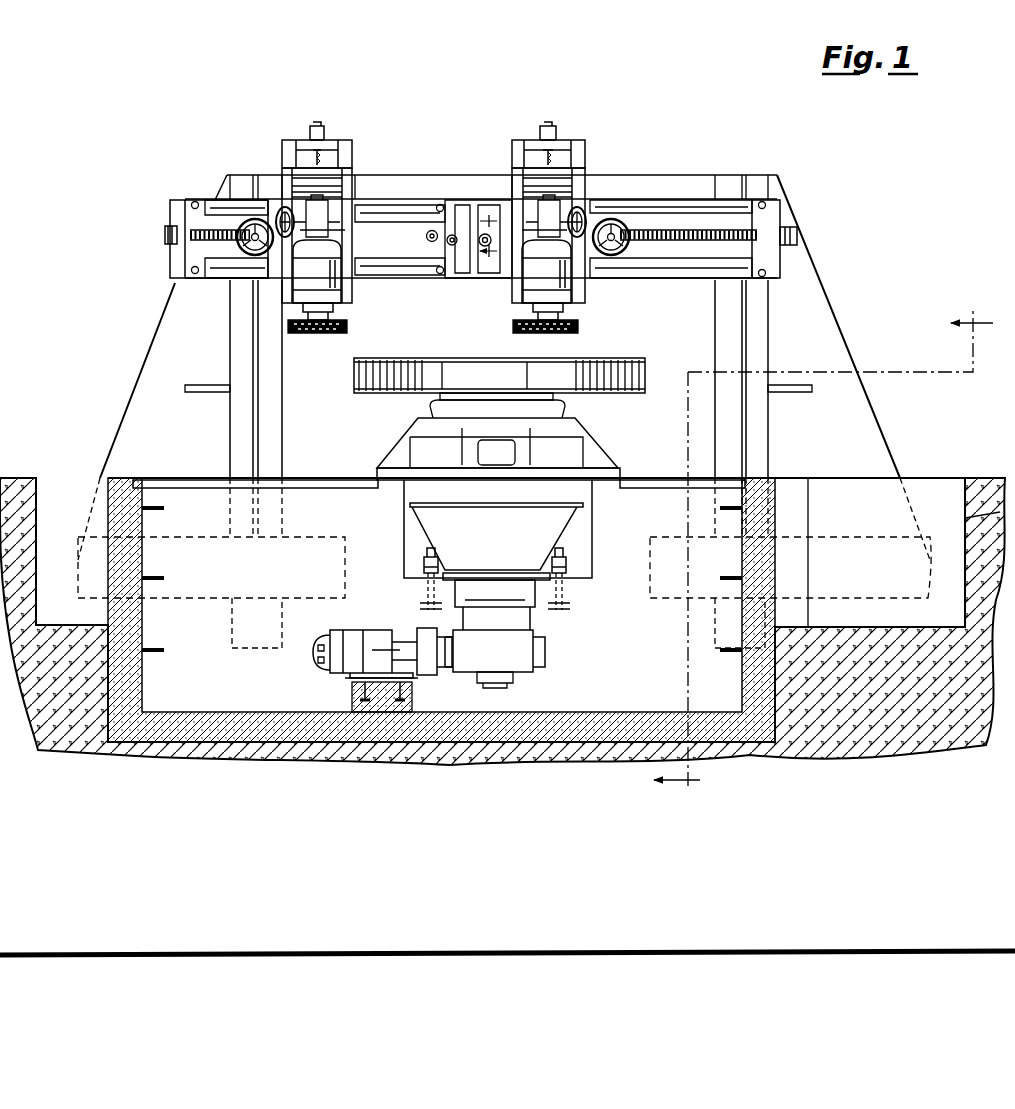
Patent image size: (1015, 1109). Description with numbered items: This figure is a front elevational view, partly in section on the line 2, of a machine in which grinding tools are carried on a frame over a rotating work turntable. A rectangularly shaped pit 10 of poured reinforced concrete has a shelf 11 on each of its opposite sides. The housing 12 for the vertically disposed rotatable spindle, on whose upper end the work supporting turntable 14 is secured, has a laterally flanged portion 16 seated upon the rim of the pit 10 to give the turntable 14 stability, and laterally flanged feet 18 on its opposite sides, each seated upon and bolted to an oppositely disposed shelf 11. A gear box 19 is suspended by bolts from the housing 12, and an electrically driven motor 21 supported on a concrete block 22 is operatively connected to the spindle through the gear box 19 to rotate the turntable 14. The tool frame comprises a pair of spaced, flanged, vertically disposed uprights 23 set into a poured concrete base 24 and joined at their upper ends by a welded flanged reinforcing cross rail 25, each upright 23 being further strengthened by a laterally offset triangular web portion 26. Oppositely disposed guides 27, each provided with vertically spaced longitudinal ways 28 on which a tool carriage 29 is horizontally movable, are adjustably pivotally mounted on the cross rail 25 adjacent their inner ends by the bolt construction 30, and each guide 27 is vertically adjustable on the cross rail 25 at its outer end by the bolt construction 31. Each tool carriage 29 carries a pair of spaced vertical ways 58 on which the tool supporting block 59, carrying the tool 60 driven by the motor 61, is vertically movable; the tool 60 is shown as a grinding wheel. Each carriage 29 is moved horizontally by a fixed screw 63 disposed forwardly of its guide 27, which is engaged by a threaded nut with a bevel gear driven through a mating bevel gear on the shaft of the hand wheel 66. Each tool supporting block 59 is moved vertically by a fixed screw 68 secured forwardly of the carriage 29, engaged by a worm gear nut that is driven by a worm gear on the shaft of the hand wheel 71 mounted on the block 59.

The section line 2 is at (832, 550).
The pit 10 is at (630, 636).
The shelf 11 is at (203, 183).
The housing 12 is at (507, 531).
The work supporting turntable 14 is at (502, 384).
The laterally flanged portion 16 is at (380, 472).
The laterally flanged feet 18 is at (424, 570).
The gear box 19 is at (505, 659).
The electrically driven motor 21 is at (315, 648).
The concrete block 22 is at (352, 694).
The uprights 23 is at (728, 317).
The poured concrete base 24 is at (24, 480).
The cross rail 25 is at (440, 184).
The triangular web portion 26 is at (192, 442).
The guides 27 is at (775, 207).
The longitudinal ways 28 is at (408, 209).
The tool carriage 29 is at (352, 160).
The bolt construction 30 is at (426, 236).
The bolt construction 31 is at (760, 245).
The vertical ways 58 is at (297, 150).
The tool supporting block 59 is at (333, 212).
The tool 60 is at (306, 334).
The motor 61 is at (322, 284).
The fixed screw 63 is at (165, 235).
The hand wheel 66 is at (256, 255).
The fixed screw 68 is at (324, 128).
The hand wheel 71 is at (280, 208).